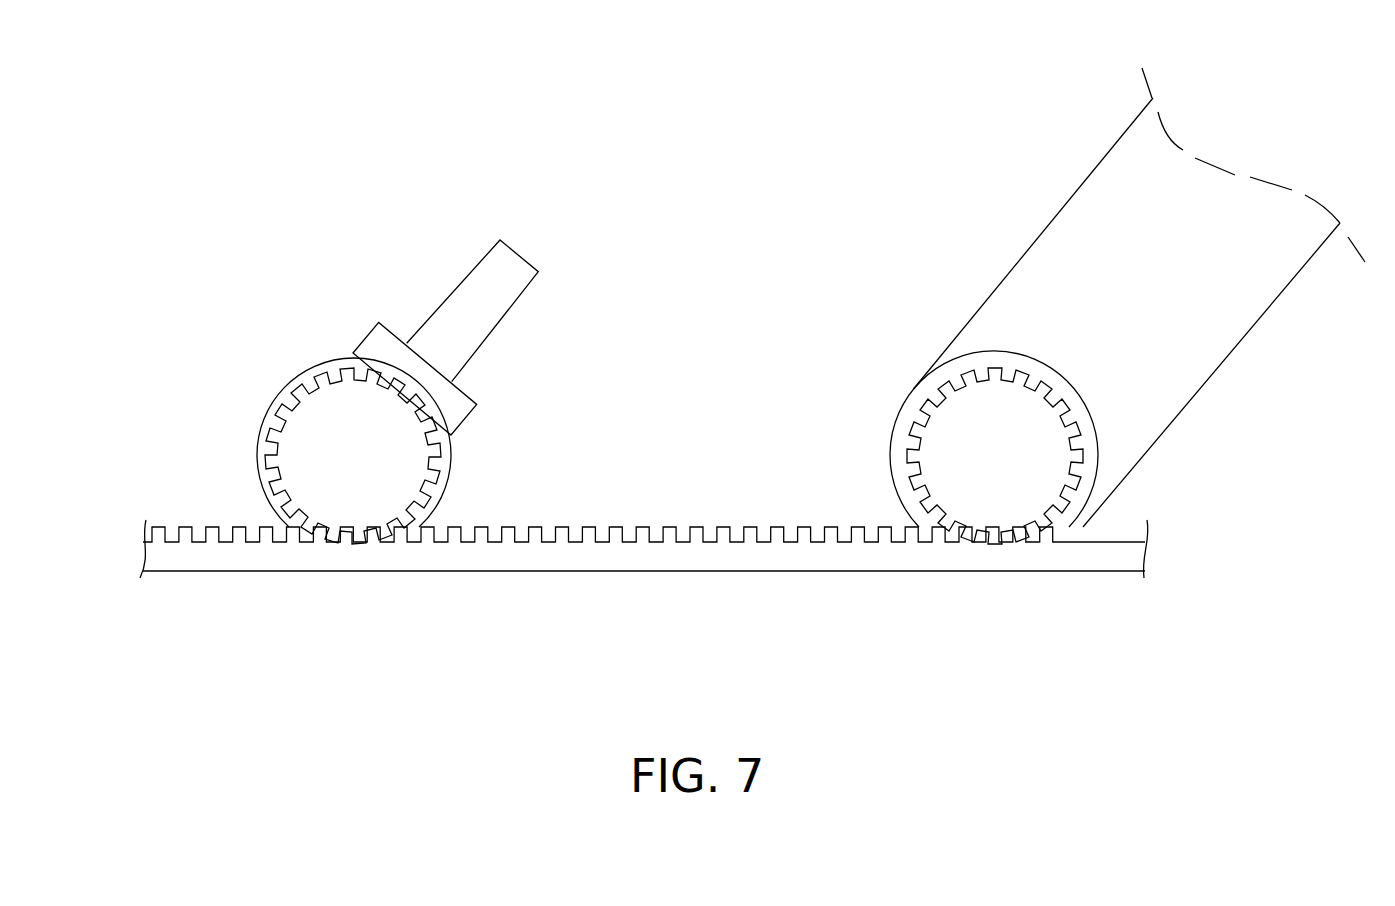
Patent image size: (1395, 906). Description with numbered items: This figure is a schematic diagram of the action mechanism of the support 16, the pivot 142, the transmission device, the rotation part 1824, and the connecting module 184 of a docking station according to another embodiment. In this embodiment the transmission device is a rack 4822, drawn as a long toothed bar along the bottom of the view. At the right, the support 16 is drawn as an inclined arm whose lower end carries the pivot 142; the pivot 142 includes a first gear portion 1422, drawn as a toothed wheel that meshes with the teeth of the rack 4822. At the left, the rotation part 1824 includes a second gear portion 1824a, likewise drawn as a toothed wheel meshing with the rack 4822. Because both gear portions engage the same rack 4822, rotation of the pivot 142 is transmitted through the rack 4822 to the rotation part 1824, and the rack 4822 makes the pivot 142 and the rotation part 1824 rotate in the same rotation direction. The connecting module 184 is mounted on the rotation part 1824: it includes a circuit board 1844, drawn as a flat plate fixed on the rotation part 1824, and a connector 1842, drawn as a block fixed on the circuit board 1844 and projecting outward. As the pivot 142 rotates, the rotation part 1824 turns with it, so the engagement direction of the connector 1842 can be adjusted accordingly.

The support 16 is at (1057, 243).
The pivot 142 is at (922, 433).
The first gear portion 1422 is at (990, 493).
The rack 4822 is at (627, 557).
The connecting module 184 is at (260, 200).
The connector 1842 is at (470, 302).
The circuit board 1844 is at (383, 336).
The rotation part 1824 is at (262, 430).
The second gear portion 1824a is at (320, 422).